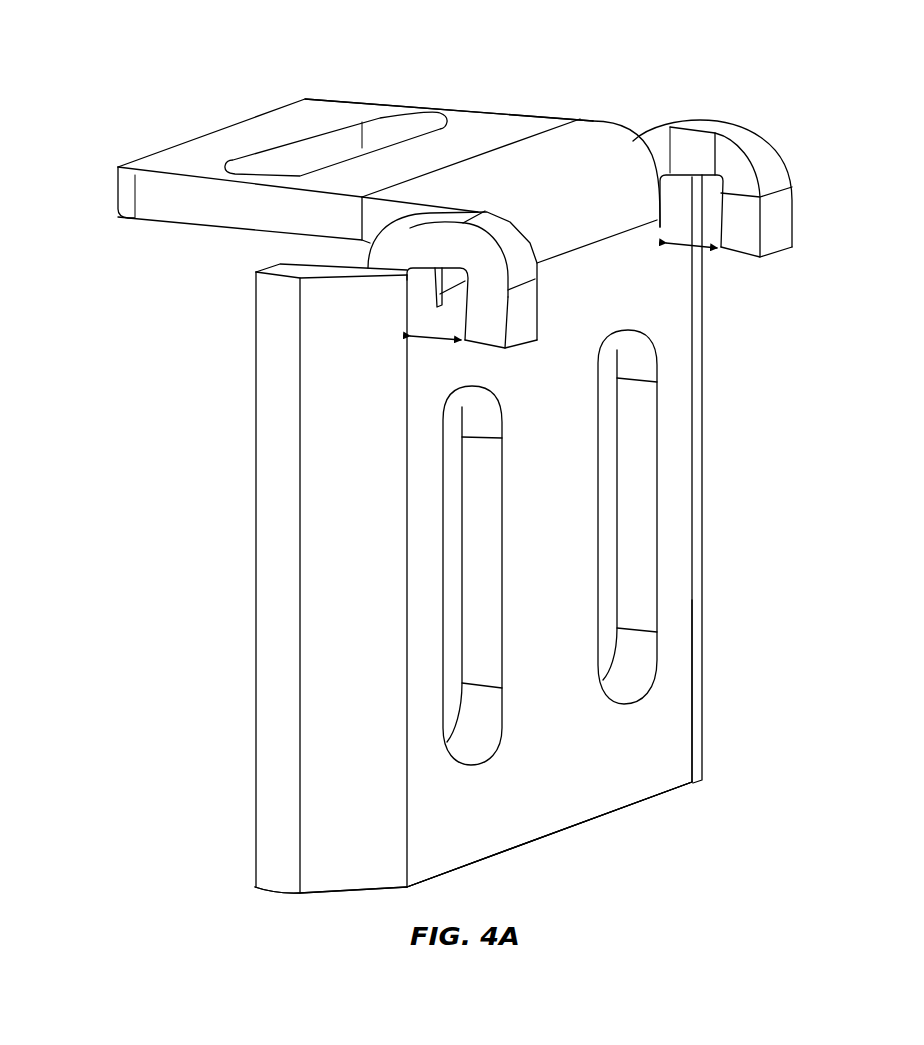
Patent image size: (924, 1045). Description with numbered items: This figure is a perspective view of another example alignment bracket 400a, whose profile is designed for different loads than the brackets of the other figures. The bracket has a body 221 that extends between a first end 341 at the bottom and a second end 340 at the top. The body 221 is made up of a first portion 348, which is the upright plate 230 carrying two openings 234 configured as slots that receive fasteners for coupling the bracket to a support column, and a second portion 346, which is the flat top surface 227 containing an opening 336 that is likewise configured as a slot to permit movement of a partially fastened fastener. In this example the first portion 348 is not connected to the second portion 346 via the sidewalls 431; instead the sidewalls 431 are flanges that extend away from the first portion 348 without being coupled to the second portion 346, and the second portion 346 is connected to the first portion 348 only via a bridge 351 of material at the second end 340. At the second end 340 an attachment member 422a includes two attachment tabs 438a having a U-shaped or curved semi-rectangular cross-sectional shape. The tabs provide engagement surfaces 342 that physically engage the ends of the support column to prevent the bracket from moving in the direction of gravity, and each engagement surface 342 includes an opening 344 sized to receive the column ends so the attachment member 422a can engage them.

The alignment bracket 400a is at (128, 66).
The attachment member 422a is at (800, 128).
The first surface 227 is at (247, 127).
The opening 336 is at (317, 137).
The engagement surfaces 342 is at (422, 283).
The second portion 346 is at (482, 120).
The attachment tabs 438a is at (508, 240).
The bridge 351 is at (567, 167).
The second end 340 is at (598, 230).
The openings 344 is at (437, 340).
The openings 234 is at (452, 540).
The sidewalls 431 is at (273, 677).
The plate 230 is at (680, 603).
The first portion 348 is at (680, 693).
The body 221 is at (567, 793).
The first end 341 is at (510, 852).